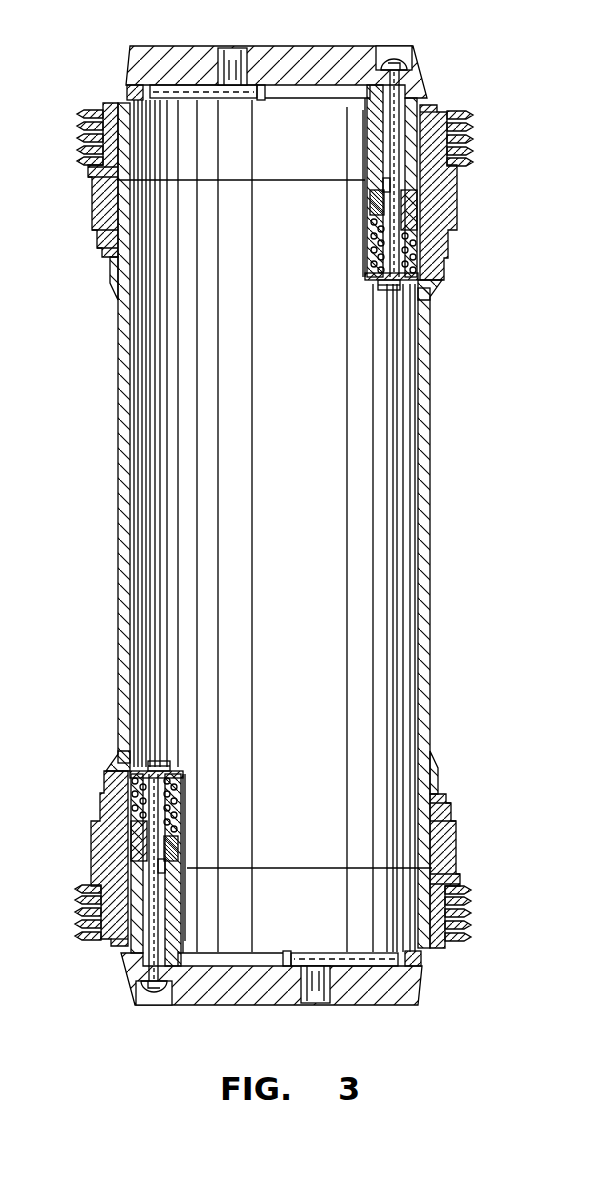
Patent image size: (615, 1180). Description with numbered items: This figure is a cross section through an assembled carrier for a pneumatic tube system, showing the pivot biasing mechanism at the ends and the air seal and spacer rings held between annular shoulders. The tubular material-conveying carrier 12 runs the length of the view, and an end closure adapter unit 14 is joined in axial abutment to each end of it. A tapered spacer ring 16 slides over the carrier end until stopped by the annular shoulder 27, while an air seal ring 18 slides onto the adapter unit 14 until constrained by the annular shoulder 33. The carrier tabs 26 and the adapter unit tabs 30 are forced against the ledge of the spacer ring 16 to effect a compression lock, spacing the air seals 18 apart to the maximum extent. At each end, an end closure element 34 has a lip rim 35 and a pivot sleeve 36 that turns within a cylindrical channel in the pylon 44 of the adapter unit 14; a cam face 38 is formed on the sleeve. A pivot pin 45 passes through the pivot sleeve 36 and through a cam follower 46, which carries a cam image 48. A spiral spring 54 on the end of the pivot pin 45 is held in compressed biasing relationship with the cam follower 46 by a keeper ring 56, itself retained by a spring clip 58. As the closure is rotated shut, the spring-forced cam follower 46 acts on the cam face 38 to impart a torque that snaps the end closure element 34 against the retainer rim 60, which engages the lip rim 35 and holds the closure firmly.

The tubular material-conveying carrier 12 is at (430, 527).
The end closure adapter unit 14 is at (132, 122).
The tapered spacer ring 16 is at (92, 194).
The air seal ring 18 is at (78, 113).
The tabs 26 is at (98, 210).
The annular shoulder 27 is at (110, 277).
The tabs 30 is at (92, 176).
The annular shoulder 33 is at (430, 105).
The end closure element 34 is at (291, 46).
The lip rim 35 is at (140, 82).
The pivot sleeve 36 is at (380, 125).
The cam face 38 is at (383, 182).
The pylon 44 is at (364, 157).
The pivot pin 45 is at (420, 85).
The cam follower 46 is at (374, 215).
The cam image 48 is at (376, 200).
The spiral spring 54 is at (367, 262).
The keeper ring 56 is at (425, 290).
The spring clip 58 is at (375, 288).
The retainer rim 60 is at (130, 90).